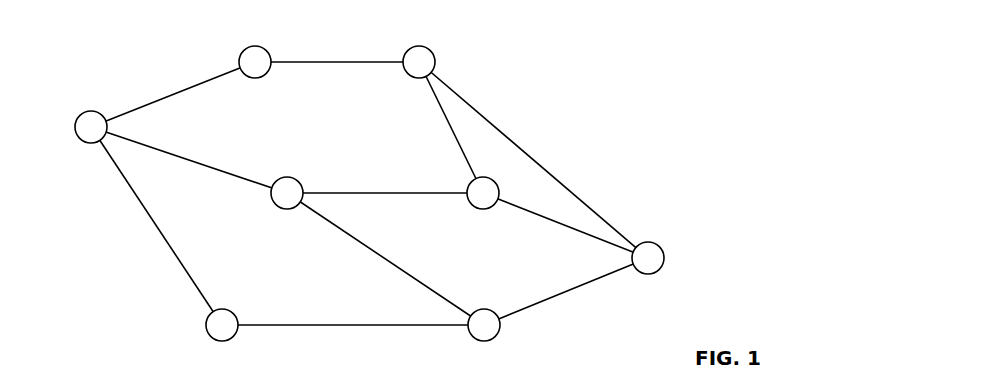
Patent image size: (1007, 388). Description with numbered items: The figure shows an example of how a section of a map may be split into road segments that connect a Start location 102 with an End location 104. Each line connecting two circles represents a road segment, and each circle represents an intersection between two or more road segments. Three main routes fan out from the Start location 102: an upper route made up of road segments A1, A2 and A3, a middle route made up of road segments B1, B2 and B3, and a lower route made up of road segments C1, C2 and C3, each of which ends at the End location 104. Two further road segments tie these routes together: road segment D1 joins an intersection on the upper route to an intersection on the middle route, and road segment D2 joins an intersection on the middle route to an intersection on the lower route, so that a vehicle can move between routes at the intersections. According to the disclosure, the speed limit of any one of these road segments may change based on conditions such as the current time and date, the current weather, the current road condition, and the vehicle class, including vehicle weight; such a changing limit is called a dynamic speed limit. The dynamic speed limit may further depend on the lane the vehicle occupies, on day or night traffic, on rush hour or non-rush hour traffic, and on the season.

The Start location 102 is at (82, 114).
The End location 104 is at (658, 245).
The road segment A1 is at (173, 94).
The road segment A2 is at (337, 49).
The road segment A3 is at (533, 160).
The road segment B1 is at (189, 160).
The road segment B2 is at (385, 181).
The road segment B3 is at (565, 225).
The road segment C1 is at (156, 226).
The road segment C2 is at (353, 338).
The road segment C3 is at (566, 292).
The road segment D1 is at (444, 127).
The road segment D2 is at (385, 259).